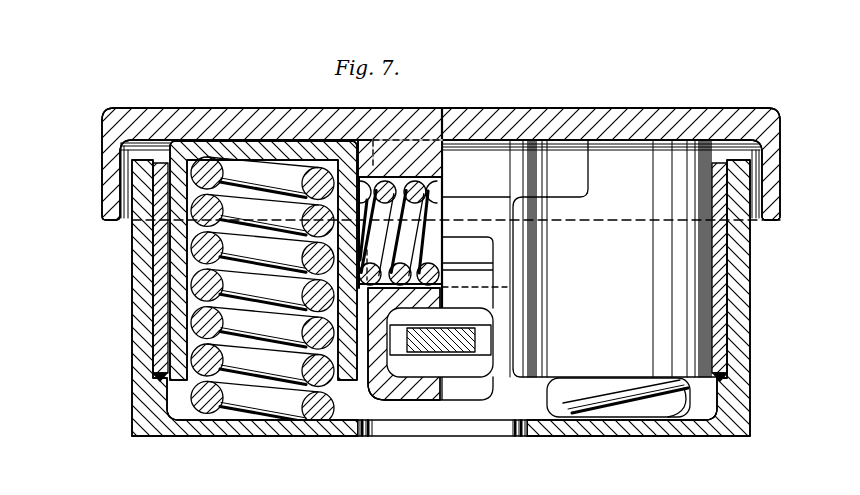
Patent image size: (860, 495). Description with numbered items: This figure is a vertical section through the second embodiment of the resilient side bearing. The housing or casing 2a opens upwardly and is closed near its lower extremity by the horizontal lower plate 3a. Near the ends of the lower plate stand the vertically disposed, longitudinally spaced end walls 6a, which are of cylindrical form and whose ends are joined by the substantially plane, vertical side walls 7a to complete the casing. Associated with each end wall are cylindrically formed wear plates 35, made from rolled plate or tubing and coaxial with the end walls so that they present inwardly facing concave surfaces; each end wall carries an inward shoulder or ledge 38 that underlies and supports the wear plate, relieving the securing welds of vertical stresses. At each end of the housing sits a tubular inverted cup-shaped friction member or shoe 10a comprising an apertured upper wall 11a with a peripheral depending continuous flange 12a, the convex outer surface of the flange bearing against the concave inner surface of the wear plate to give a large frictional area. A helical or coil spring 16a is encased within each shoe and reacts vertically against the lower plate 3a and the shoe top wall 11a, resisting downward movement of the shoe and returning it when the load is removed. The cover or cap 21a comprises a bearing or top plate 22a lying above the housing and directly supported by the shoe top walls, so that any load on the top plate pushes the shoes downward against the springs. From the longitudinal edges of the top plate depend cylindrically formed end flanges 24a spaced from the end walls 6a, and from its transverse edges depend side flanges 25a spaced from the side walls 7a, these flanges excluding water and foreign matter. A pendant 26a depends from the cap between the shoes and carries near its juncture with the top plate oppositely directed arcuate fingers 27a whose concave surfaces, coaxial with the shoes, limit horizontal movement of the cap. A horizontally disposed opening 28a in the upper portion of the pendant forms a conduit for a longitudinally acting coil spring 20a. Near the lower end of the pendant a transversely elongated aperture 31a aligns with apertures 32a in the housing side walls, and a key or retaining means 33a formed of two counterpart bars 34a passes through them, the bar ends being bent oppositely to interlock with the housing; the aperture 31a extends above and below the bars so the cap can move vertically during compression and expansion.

The housing or casing 2a is at (698, 437).
The lower plate 3a is at (233, 433).
The end walls 6a is at (132, 271).
The side walls 7a is at (442, 420).
The friction member, block or shoe 10a is at (338, 381).
The upper or closing wall 11a is at (302, 140).
The peripheral depending continuous flange 12a is at (340, 238).
The helical or coil spring 16a is at (440, 387).
The coil or helical spring 20a is at (428, 247).
The cover or cap 21a is at (581, 103).
The bearing or top plate 22a is at (648, 112).
The end flanges 24a is at (102, 192).
The side flanges 25a is at (592, 219).
The pendant 26a is at (498, 388).
The arcuate extensions or fingers 27a is at (576, 258).
The opening 28a is at (425, 182).
The aperture 31a is at (468, 372).
The apertures 32a is at (487, 345).
The key or retaining means 33a is at (463, 325).
The plates or bars 34a is at (404, 343).
The bearing or wear plates 35 is at (158, 307).
The shoulder or ledge 38 is at (160, 378).